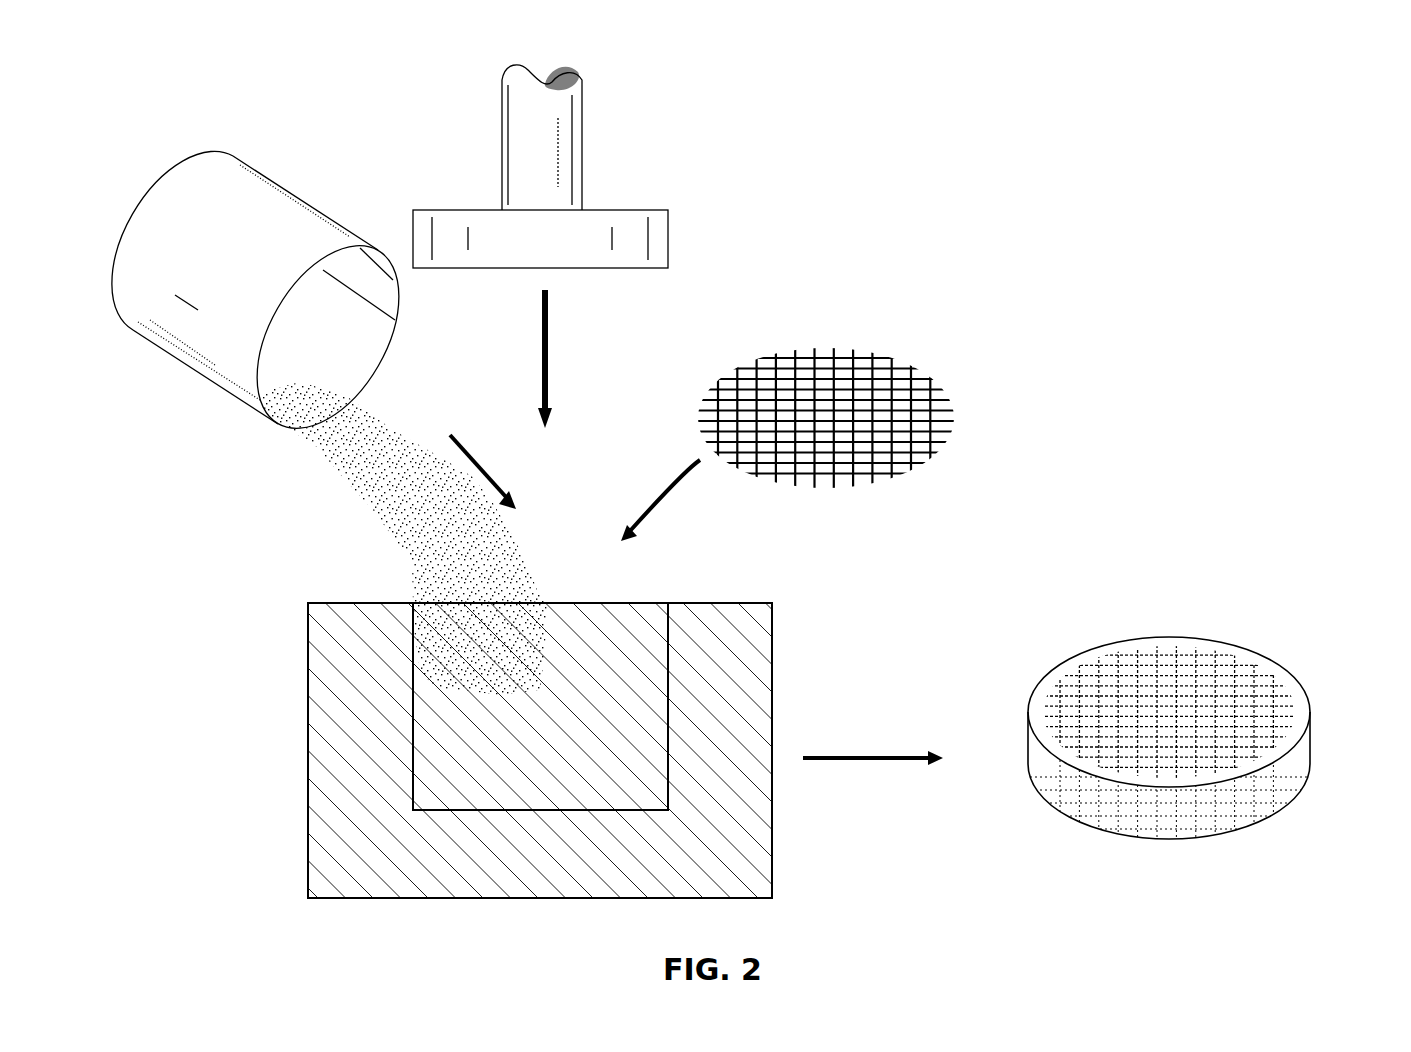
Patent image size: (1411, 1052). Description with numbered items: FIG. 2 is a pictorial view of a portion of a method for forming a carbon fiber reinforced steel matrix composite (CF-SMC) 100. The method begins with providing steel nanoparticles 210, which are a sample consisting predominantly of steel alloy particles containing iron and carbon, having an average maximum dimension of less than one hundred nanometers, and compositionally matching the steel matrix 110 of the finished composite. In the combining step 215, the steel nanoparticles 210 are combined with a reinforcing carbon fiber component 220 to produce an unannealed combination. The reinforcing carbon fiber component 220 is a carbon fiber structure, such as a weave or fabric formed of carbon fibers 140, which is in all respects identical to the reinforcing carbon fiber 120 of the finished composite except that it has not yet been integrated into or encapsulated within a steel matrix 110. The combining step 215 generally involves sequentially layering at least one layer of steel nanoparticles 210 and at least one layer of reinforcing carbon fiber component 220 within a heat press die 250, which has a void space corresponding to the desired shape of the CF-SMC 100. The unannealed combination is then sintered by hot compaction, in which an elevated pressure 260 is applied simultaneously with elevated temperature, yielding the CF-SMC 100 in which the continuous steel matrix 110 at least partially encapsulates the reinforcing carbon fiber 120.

The carbon fiber reinforced steel matrix composite 100 is at (1210, 669).
The steel matrix 110 is at (1305, 747).
The reinforcing carbon fiber 120 is at (1238, 657).
The carbon fiber 140 is at (777, 357).
The steel nanoparticles 210 is at (402, 433).
The combining step 215 is at (487, 460).
The reinforcing carbon fiber component 220 is at (829, 384).
The heat press die 250 is at (308, 757).
The elevated pressure 260 is at (548, 345).